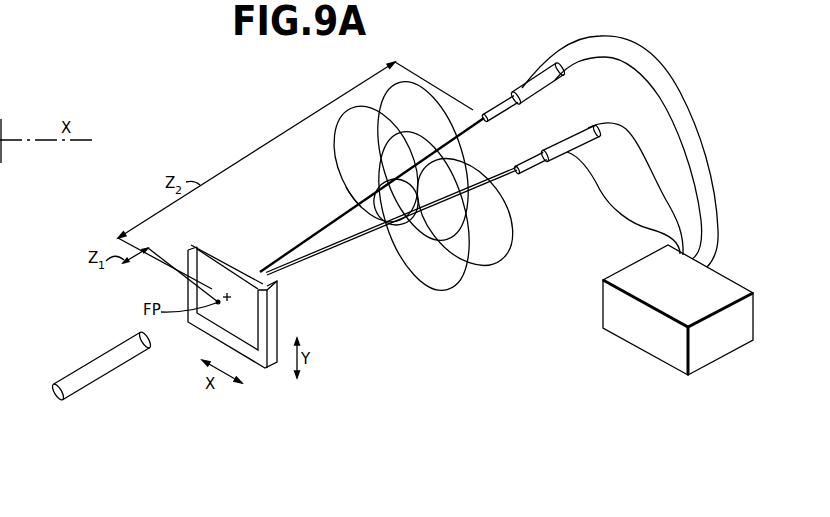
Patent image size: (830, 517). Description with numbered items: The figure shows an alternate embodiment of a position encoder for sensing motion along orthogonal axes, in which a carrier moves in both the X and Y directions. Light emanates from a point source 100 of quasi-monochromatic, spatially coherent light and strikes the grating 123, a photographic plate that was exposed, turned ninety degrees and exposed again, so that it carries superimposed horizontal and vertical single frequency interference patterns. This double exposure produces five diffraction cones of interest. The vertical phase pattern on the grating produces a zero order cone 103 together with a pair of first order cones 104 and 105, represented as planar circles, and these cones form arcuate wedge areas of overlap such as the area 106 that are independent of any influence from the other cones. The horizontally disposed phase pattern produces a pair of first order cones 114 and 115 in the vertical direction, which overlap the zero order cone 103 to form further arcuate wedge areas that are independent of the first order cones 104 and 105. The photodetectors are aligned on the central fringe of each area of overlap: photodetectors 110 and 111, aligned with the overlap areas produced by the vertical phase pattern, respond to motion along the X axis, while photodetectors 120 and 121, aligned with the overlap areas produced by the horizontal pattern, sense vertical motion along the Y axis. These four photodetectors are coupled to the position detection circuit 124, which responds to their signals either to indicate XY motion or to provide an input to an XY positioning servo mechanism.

The point source 100 is at (115, 353).
The zero order cone 103 is at (440, 237).
The first order cone 104 is at (335, 161).
The first order cone 105 is at (500, 260).
The area of overlap 106 is at (352, 193).
The photodetector 110 is at (497, 103).
The photodetector 111 is at (592, 143).
The first order cone 114 is at (432, 85).
The first order cone 115 is at (447, 292).
The photodetector 120 is at (550, 85).
The photodetector 121 is at (532, 172).
The grating 123 is at (220, 277).
The position detection circuit 124 is at (735, 278).